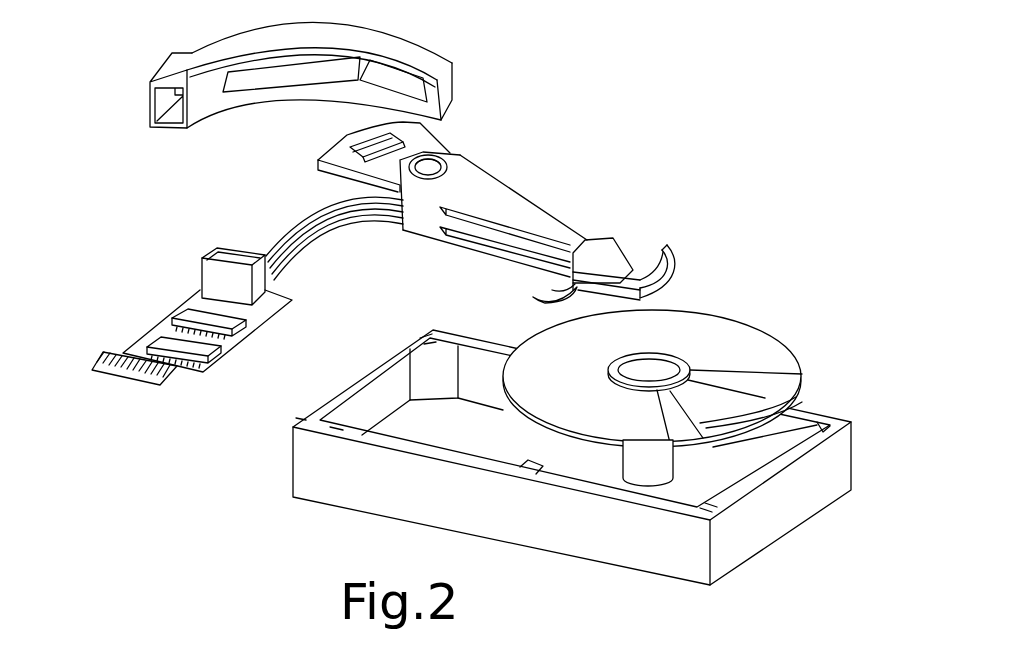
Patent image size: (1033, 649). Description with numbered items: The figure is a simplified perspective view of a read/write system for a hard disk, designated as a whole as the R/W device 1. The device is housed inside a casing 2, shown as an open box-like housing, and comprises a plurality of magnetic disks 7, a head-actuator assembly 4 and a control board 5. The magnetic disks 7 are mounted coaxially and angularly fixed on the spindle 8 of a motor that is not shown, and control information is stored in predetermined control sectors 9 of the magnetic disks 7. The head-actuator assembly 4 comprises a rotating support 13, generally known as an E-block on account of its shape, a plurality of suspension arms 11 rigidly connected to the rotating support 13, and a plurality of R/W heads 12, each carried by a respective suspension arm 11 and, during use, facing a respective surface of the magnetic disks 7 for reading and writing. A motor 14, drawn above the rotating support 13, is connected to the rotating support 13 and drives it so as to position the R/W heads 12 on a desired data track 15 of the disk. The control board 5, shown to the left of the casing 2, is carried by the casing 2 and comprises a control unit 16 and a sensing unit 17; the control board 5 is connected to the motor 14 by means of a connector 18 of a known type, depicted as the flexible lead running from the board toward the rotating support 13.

The R/W device 1 is at (678, 97).
The casing 2 is at (341, 495).
The head-actuator assembly 4 is at (467, 143).
The control board 5 is at (228, 344).
The magnetic disks 7 is at (720, 330).
The spindle motor 8 is at (632, 462).
The control sectors 9 is at (763, 376).
The suspension arms 11 is at (618, 257).
The R/W heads 12 is at (665, 246).
The rotating support 13 is at (467, 177).
The motor 14 is at (352, 114).
The data track 15 is at (757, 403).
The control unit 16 is at (192, 317).
The sensing unit 17 is at (158, 340).
The connector 18 is at (340, 222).